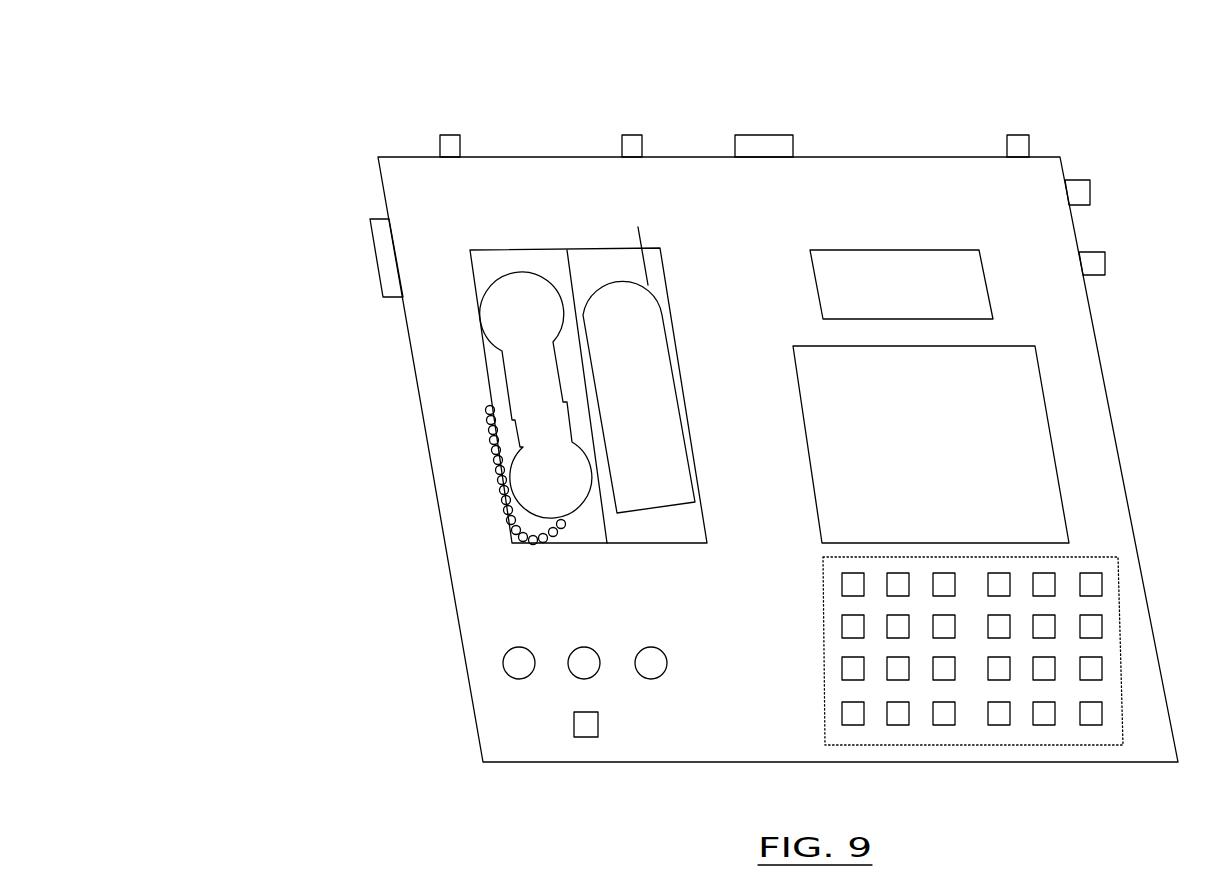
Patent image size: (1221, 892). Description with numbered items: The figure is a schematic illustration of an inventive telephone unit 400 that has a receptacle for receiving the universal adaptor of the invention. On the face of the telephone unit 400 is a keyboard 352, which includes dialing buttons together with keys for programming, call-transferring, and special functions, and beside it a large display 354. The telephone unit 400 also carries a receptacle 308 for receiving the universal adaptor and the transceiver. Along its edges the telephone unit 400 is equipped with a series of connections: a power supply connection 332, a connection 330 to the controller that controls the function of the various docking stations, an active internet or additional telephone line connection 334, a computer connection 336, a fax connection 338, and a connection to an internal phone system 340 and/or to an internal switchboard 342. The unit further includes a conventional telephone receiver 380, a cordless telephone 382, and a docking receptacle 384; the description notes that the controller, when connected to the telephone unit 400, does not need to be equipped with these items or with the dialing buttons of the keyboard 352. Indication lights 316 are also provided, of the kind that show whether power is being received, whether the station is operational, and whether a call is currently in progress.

The telephone unit 400 is at (274, 111).
The power supply connection 332 is at (450, 125).
The active internet or additional telephone line connection 334 is at (632, 125).
The computer connection 336 is at (766, 127).
The fax connection 338 is at (1035, 132).
The connection to an internal phone system 340 is at (1093, 192).
The connection to an internal switchboard 342 is at (1108, 263).
The connection to controller 330 is at (385, 260).
The receptacle 308 is at (888, 288).
The large display 354 is at (1028, 472).
The conventional telephone receiver 380 is at (505, 308).
The cordless telephone 382 is at (622, 332).
The docking receptacle 384 is at (645, 530).
The indication lights 316 is at (578, 648).
The keyboard 352 is at (918, 712).